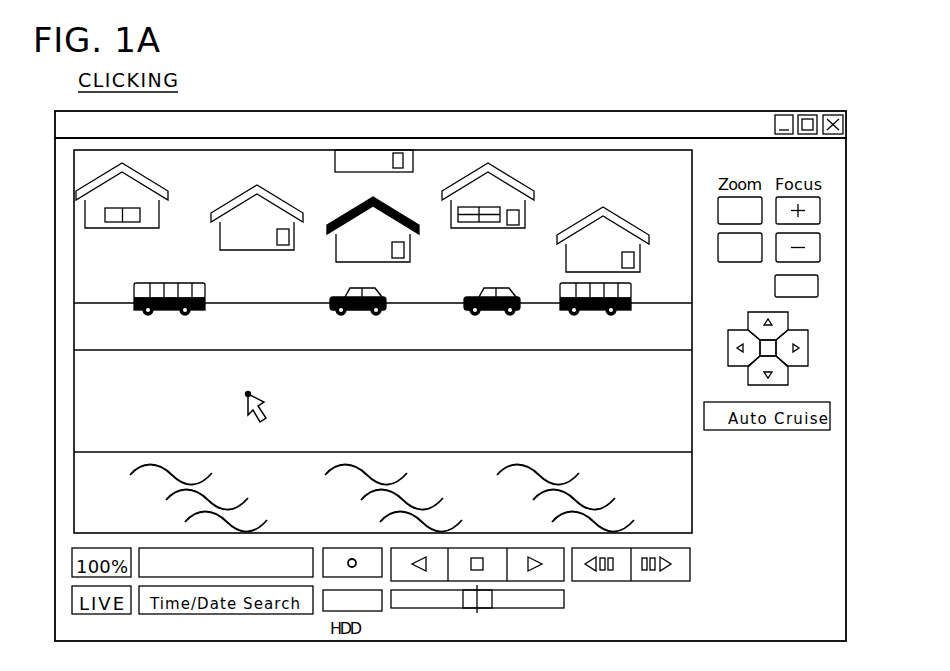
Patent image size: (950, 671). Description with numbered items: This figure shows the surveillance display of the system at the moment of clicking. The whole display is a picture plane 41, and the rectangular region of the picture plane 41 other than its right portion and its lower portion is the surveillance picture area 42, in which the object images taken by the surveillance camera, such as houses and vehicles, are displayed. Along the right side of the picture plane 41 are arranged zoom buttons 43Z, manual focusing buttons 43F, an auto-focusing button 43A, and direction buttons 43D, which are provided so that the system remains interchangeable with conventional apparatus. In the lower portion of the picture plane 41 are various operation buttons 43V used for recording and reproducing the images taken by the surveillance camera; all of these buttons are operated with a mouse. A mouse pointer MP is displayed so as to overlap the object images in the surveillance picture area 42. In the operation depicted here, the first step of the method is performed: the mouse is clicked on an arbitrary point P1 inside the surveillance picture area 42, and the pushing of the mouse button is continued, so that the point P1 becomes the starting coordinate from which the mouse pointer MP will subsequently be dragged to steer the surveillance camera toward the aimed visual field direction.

The picture plane 41 is at (300, 111).
The surveillance picture area 42 is at (491, 148).
The zoom buttons 43Z is at (716, 240).
The manual focusing buttons 43F is at (820, 215).
The auto-focusing button 43A is at (818, 288).
The direction buttons 43D is at (808, 348).
The operation buttons 43V is at (515, 600).
The point P1 is at (248, 394).
The mouse pointer MP is at (262, 424).